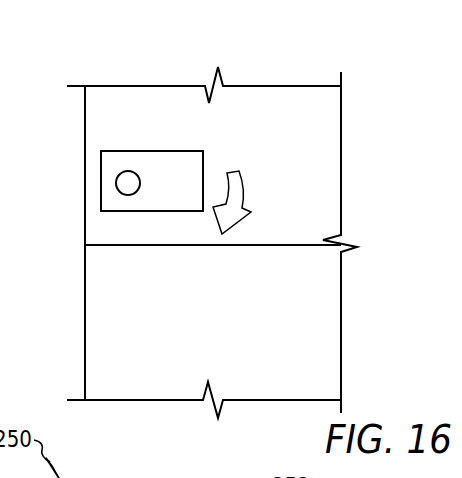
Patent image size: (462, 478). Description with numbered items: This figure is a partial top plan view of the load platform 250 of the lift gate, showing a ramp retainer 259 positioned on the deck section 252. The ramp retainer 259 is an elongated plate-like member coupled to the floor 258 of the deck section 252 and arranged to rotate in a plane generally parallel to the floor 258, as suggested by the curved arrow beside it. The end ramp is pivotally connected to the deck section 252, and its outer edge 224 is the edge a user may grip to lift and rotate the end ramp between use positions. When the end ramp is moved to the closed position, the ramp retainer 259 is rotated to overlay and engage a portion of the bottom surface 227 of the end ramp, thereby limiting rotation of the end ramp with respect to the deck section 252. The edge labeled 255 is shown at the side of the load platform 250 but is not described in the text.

The load platform 250 is at (68, 44).
The side wall 255 is at (85, 117).
The deck section 252 is at (285, 104).
The ramp retainer 259 is at (162, 170).
The floor 258 is at (302, 161).
The outer edge 224 is at (265, 244).
The bottom surface 227 is at (213, 338).